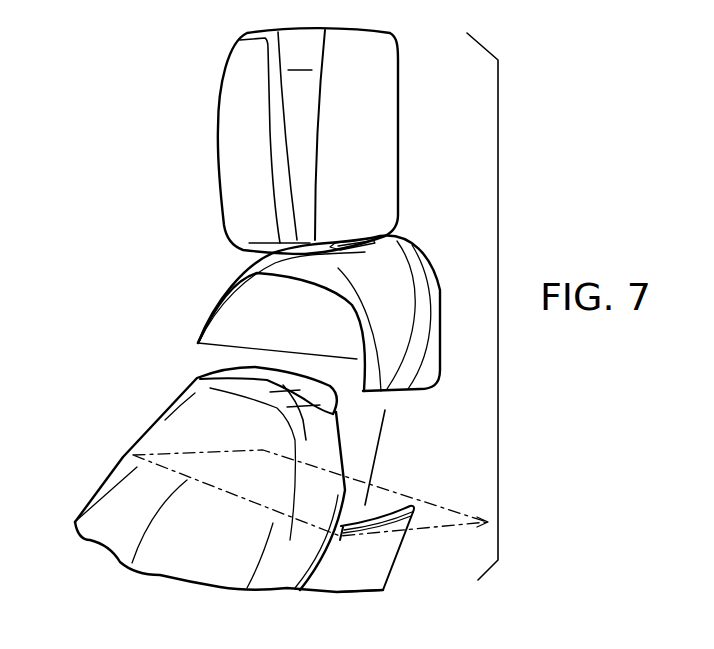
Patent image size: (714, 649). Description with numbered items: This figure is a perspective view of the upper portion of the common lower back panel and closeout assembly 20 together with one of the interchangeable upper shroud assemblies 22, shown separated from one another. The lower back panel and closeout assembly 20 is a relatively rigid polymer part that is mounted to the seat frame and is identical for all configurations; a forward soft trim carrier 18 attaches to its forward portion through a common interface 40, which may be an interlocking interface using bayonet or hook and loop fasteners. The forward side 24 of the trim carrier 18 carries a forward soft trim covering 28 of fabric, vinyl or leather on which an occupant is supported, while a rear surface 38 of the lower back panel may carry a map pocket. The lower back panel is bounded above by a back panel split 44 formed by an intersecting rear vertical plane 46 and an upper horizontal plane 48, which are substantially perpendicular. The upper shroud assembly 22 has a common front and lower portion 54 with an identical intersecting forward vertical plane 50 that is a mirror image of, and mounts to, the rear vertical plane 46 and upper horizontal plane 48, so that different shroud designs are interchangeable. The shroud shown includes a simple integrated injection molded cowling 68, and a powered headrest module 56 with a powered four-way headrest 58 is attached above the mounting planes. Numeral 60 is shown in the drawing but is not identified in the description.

The forward soft trim carrier 18 is at (228, 570).
The common lower back panel and closeout assembly 20 is at (377, 563).
The interchangeable upper shroud assembly 22 is at (422, 168).
The forward side 24 is at (113, 537).
The forward soft trim covering 28 is at (160, 555).
The rear surface 38 is at (405, 547).
The common interface 40 is at (315, 580).
The back panel split 44 is at (380, 498).
The intersecting rear vertical plane 46 is at (300, 377).
The upper horizontal plane 48 is at (405, 503).
The intersecting forward vertical plane 50 is at (228, 275).
The common front and lower portion 54 is at (343, 297).
The powered headrest module 56 is at (377, 122).
The powered four-way headrest 58 is at (223, 128).
The axis 60 is at (440, 648).
The integrated injection molded cowling 68 is at (397, 257).